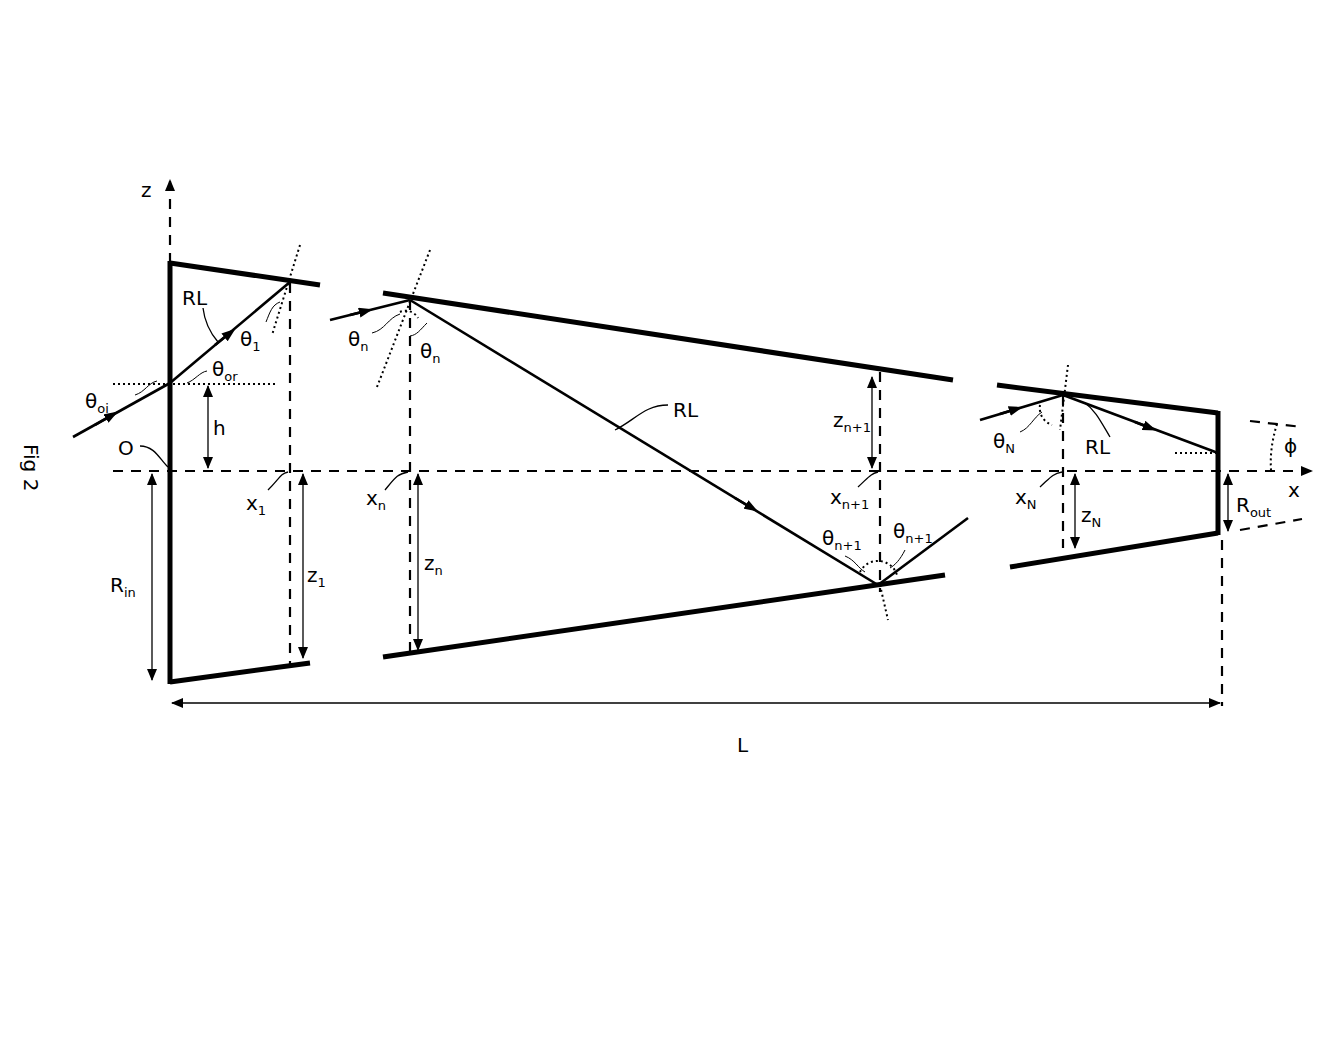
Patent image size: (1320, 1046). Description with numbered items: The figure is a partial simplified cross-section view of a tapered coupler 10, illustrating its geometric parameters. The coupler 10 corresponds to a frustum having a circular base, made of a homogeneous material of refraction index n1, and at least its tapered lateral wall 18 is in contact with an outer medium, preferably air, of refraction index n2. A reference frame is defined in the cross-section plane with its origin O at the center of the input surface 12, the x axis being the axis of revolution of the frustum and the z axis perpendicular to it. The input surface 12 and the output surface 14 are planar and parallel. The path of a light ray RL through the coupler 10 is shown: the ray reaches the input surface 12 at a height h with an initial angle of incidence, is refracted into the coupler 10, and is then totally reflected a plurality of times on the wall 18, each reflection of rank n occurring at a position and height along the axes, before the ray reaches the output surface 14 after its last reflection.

The tapered coupler 10 is at (682, 442).
The input surface 12 is at (168, 318).
The output surface 14 is at (1220, 433).
The tapered lateral wall 18 is at (815, 357).